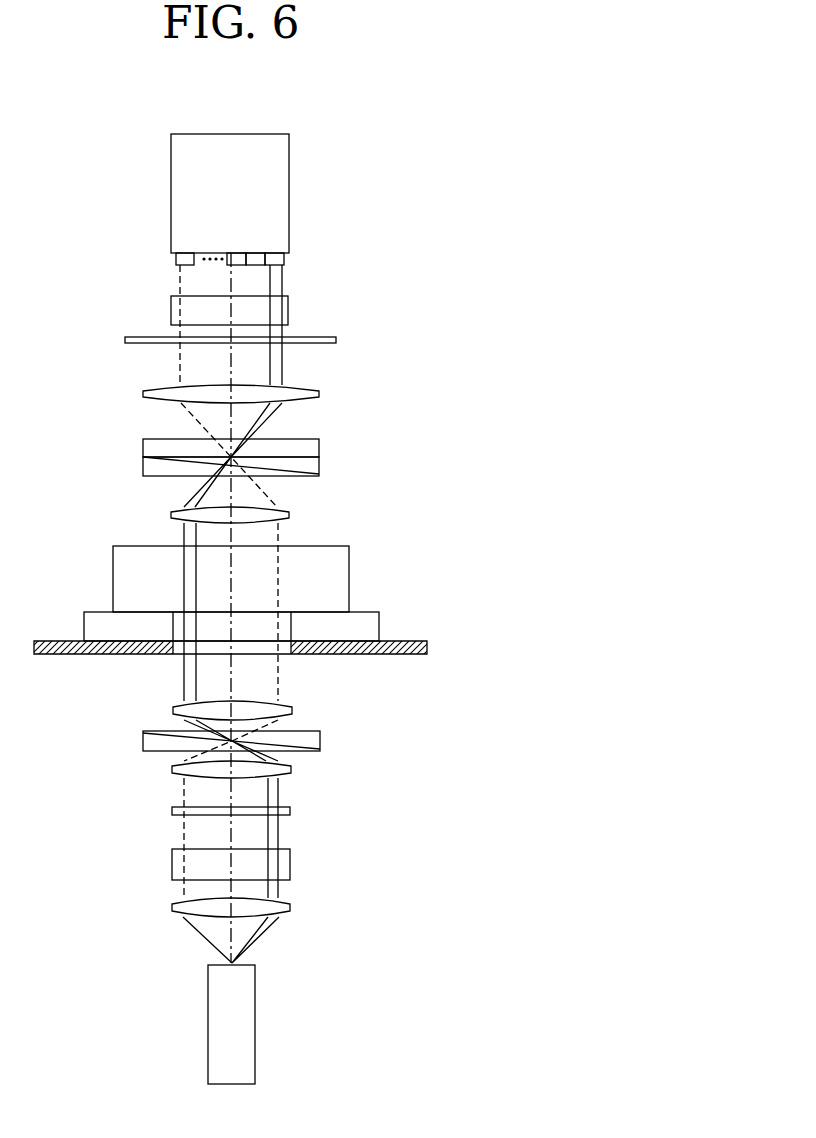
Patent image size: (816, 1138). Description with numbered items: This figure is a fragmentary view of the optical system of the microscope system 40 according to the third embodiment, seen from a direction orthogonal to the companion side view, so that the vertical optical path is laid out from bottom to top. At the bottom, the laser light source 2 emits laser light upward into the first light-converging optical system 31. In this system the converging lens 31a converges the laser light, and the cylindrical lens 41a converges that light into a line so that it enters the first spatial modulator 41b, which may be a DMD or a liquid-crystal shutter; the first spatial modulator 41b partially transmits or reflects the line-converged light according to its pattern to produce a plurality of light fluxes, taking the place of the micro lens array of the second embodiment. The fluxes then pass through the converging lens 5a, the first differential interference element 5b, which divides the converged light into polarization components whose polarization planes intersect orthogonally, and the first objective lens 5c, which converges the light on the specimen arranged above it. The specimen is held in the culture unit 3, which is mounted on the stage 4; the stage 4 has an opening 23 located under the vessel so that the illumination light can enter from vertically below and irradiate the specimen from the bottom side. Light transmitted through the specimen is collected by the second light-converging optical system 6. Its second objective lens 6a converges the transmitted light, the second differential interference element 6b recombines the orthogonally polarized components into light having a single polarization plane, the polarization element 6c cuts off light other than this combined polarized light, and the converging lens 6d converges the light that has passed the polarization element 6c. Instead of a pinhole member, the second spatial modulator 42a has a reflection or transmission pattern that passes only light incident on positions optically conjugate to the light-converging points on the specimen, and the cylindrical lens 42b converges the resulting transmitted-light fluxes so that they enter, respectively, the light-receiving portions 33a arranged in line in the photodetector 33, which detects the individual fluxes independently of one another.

The microscope system 40 is at (433, 157).
The photodetector 33 is at (289, 168).
The light-receiving portions 33a is at (258, 253).
The cylindrical lens 42b is at (292, 303).
The second spatial modulator 42a is at (338, 341).
The second light-converging optical system 6 is at (120, 417).
The converging lens 6d is at (320, 392).
The polarization element 6c is at (320, 443).
The second differential interference element 6b is at (320, 465).
The second objective lens 6a is at (290, 513).
The culture unit 3 is at (349, 572).
The stage 4 is at (379, 623).
The opening 23 is at (291, 626).
The first objective lens 5c is at (172, 707).
The first differential interference element 5b is at (143, 740).
The converging lens 5a is at (172, 768).
The first spatial modulator 41b is at (172, 809).
The cylindrical lens 41a is at (172, 864).
The converging lens 31a is at (172, 903).
The first light-converging optical system 31 is at (340, 893).
The laser light source 2 is at (208, 1018).